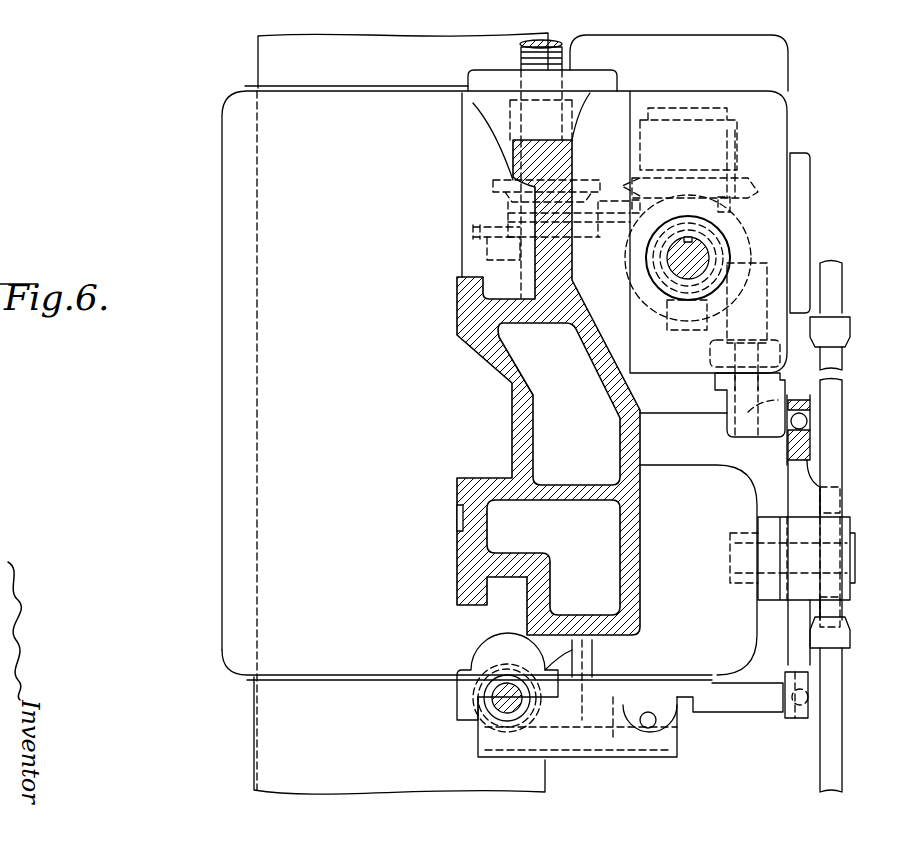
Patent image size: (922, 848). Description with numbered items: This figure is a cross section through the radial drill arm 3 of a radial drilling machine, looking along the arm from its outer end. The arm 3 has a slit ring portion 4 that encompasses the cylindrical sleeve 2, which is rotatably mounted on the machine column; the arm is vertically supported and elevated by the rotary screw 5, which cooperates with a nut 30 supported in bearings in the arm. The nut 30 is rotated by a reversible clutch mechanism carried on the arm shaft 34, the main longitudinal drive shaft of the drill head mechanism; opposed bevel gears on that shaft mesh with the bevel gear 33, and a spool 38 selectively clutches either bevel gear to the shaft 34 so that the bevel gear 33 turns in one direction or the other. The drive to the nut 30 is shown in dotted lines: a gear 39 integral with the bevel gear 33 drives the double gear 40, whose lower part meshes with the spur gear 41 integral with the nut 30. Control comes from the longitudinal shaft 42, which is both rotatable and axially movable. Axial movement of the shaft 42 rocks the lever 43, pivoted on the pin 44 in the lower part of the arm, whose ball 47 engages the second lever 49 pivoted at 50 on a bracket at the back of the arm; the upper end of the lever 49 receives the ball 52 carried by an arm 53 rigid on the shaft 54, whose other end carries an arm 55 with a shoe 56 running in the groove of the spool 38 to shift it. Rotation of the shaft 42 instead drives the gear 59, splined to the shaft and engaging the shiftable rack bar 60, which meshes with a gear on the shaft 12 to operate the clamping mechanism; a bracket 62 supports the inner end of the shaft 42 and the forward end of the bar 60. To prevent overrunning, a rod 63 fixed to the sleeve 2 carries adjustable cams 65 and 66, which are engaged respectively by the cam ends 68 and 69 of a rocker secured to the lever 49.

The cylindrical sleeve 2 is at (521, 413).
The radial drill arm 3 is at (512, 410).
The slit ring portion 4 is at (222, 433).
The rotary screw 5 is at (517, 53).
The shaft 12 is at (648, 728).
The nut 30 is at (485, 250).
The bevel gear 33 is at (668, 184).
The arm shaft 34 is at (672, 258).
The spool 38 is at (734, 212).
The gear 39 is at (738, 185).
The double gear 40 is at (600, 200).
The spur gear 41 is at (467, 229).
The shaft 42 is at (490, 697).
The lever 43 is at (730, 708).
The pin 44 is at (613, 745).
The ball 47 is at (800, 712).
The second lever 49 is at (800, 477).
The pivot 50 is at (853, 562).
The ball 52 is at (807, 420).
The arm 53 is at (742, 430).
The shaft 54 is at (743, 330).
The arm 55 is at (768, 273).
The shoe 56 is at (640, 290).
The gear 59 is at (533, 670).
The shiftable bar 60 is at (577, 750).
The bracket 62 is at (457, 718).
The rod 63 is at (833, 275).
The cam 65 is at (845, 325).
The cam 66 is at (850, 635).
The cam end 68 is at (833, 500).
The cam end 69 is at (833, 610).